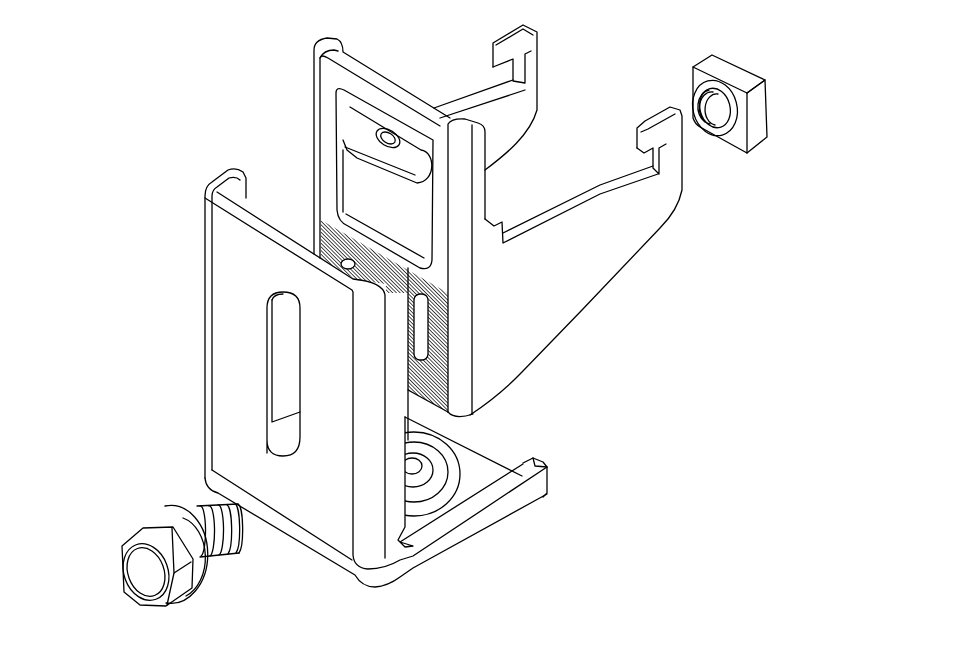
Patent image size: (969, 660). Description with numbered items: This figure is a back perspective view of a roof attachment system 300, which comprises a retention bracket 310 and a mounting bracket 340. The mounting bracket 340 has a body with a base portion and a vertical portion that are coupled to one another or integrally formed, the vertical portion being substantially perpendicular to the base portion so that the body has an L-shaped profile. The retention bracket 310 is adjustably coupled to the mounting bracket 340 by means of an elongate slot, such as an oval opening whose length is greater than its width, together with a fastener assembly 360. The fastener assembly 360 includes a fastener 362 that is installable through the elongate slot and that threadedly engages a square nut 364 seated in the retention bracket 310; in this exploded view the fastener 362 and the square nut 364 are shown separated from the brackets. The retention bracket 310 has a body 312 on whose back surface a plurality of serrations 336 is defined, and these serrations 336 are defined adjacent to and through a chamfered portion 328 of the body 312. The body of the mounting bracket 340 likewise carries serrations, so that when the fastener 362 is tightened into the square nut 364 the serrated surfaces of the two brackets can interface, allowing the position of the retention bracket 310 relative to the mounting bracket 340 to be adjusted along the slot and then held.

The roof attachment system 300 is at (112, 54).
The retention bracket 310 is at (580, 313).
The body 312 is at (331, 43).
The chamfered portion 328 is at (350, 210).
The plurality of serrations 336 is at (458, 392).
The mounting bracket 340 is at (500, 522).
The fastener assembly 360 is at (127, 587).
The fastener 362 is at (137, 528).
The square nut 364 is at (733, 62).